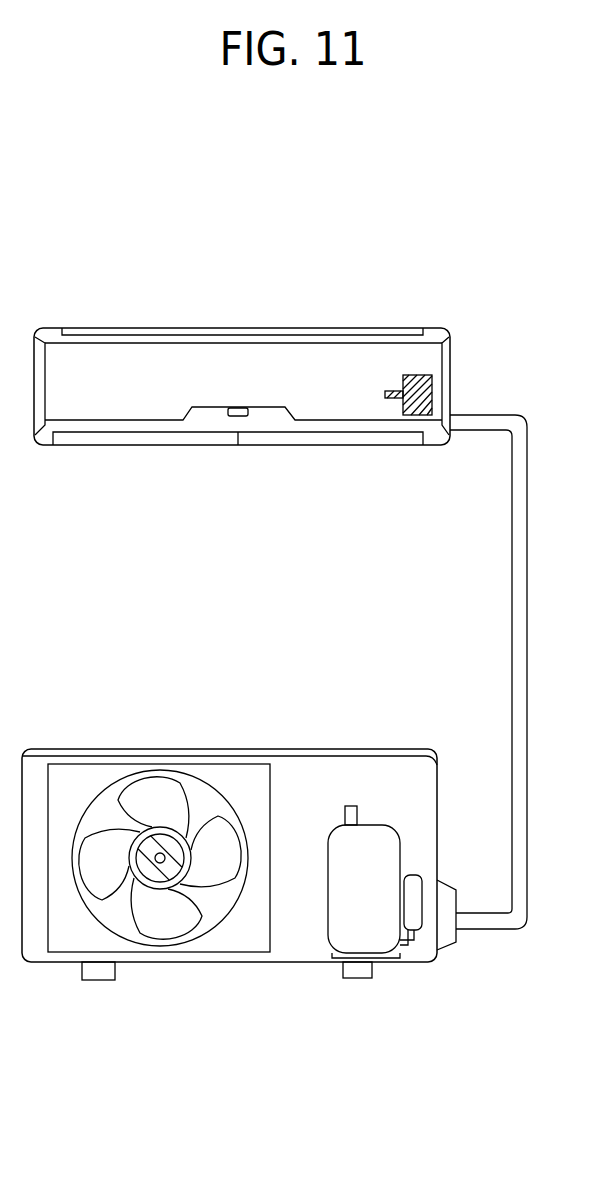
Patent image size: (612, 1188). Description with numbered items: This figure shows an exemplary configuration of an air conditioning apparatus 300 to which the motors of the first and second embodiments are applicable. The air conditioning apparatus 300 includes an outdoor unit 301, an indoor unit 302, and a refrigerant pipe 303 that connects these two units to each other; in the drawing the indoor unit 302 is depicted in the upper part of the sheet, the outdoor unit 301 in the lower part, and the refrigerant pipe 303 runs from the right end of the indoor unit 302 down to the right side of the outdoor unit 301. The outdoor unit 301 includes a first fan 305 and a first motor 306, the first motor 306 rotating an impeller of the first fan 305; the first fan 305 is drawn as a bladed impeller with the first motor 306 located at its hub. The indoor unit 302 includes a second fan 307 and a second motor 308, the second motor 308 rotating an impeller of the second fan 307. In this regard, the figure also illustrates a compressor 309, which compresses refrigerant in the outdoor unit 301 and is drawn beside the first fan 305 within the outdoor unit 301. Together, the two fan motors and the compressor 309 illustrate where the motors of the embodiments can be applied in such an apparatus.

The air conditioning apparatus 300 is at (518, 268).
The outdoor unit 301 is at (284, 748).
The indoor unit 302 is at (338, 326).
The refrigerant pipe 303 is at (512, 618).
The first fan 305 is at (155, 790).
The first motor 306 is at (146, 868).
The second fan 307 is at (265, 413).
The second motor 308 is at (423, 384).
The compressor 309 is at (327, 920).